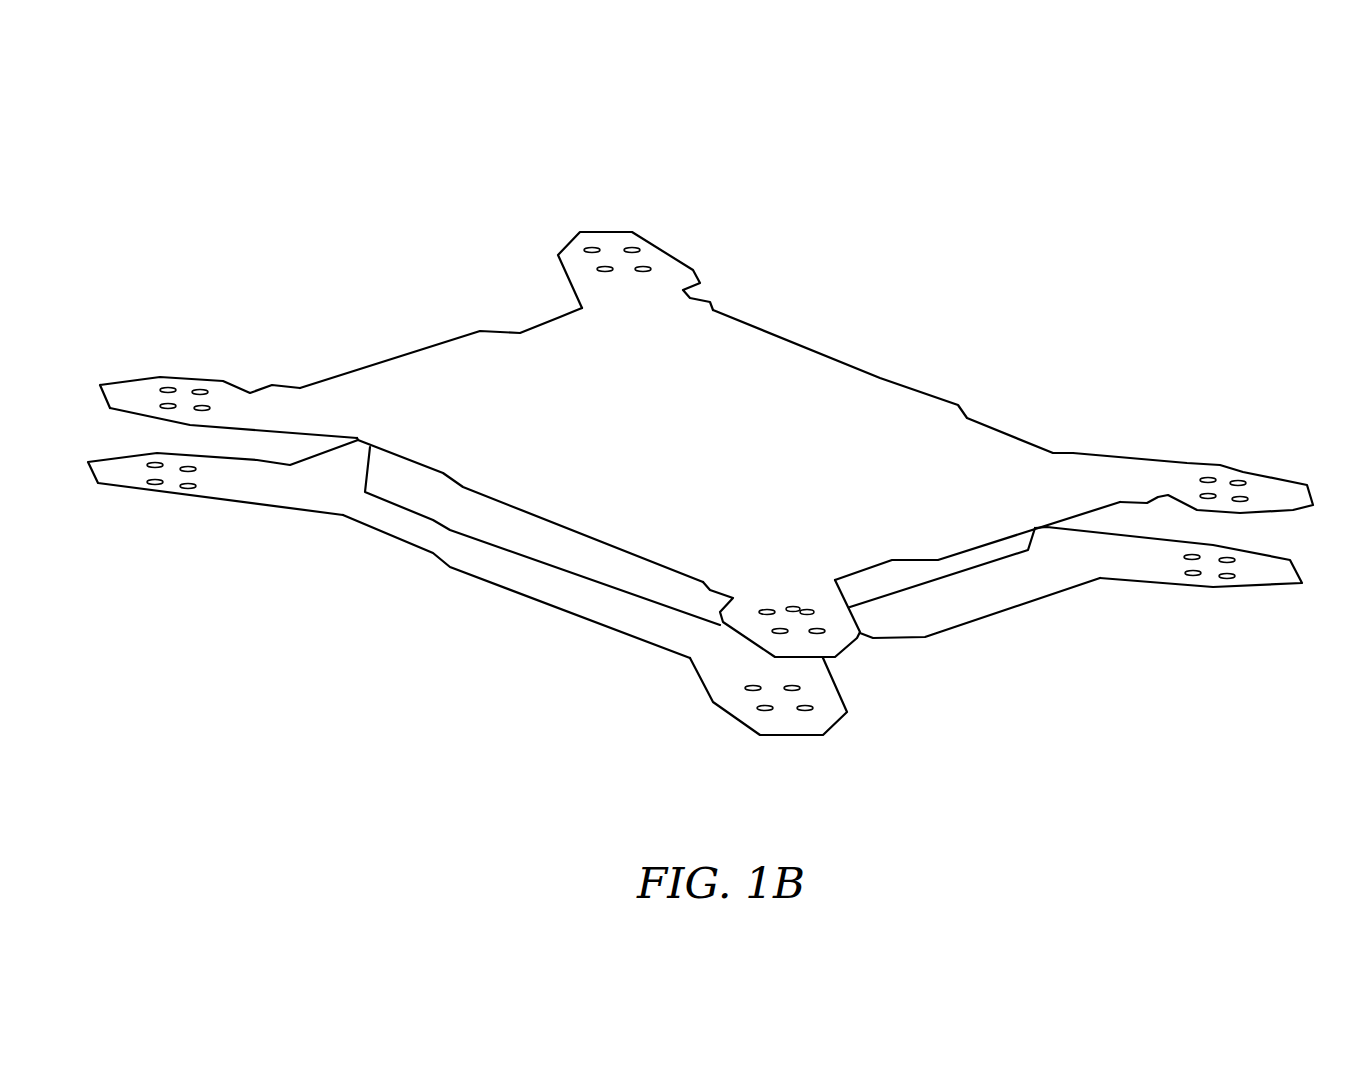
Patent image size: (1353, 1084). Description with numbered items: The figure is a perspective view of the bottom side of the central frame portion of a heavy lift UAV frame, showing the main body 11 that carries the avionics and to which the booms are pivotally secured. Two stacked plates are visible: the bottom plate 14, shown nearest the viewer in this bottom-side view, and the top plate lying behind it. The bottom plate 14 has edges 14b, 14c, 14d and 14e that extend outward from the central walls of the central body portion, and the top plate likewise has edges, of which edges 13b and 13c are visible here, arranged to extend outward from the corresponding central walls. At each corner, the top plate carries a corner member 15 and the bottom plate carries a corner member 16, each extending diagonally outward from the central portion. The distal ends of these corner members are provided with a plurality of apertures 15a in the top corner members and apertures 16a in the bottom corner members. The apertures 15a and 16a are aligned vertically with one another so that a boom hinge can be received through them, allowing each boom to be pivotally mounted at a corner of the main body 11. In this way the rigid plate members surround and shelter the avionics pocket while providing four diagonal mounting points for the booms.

The main body 11 is at (250, 177).
The top plate edge 13b is at (603, 627).
The top plate edge 13c is at (958, 628).
The bottom plate 14 is at (772, 405).
The bottom plate edge 14b is at (485, 502).
The bottom plate edge 14c is at (997, 543).
The bottom plate edge 14d is at (893, 373).
The bottom plate edge 14e is at (397, 357).
The top plate corner member 15 is at (237, 498).
The apertures 15a is at (188, 486).
The bottom plate corner member 16 is at (228, 395).
The apertures 16a is at (202, 408).